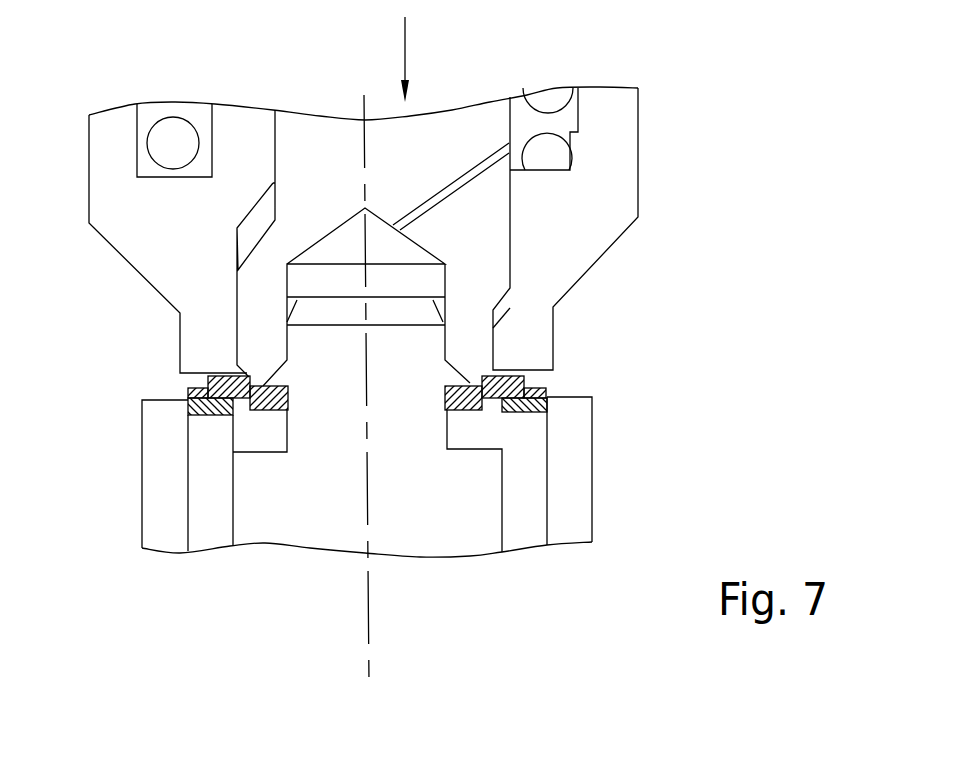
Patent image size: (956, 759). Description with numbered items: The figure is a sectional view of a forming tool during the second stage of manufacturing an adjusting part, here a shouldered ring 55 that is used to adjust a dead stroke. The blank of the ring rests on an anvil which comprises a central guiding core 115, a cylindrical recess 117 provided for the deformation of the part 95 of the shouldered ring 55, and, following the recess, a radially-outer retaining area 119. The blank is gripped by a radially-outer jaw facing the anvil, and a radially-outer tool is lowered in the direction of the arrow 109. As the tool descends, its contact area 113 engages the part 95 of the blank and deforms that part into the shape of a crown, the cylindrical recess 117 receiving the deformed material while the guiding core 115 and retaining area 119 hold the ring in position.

The arrow 109 is at (405, 48).
The shouldered ring 55 is at (188, 384).
The contact area 113 is at (470, 373).
The central guiding core 115 is at (432, 420).
The radially-outer retaining area 119 is at (575, 395).
The part of the shouldered ring 95 is at (268, 411).
The cylindrical recess 117 is at (463, 443).